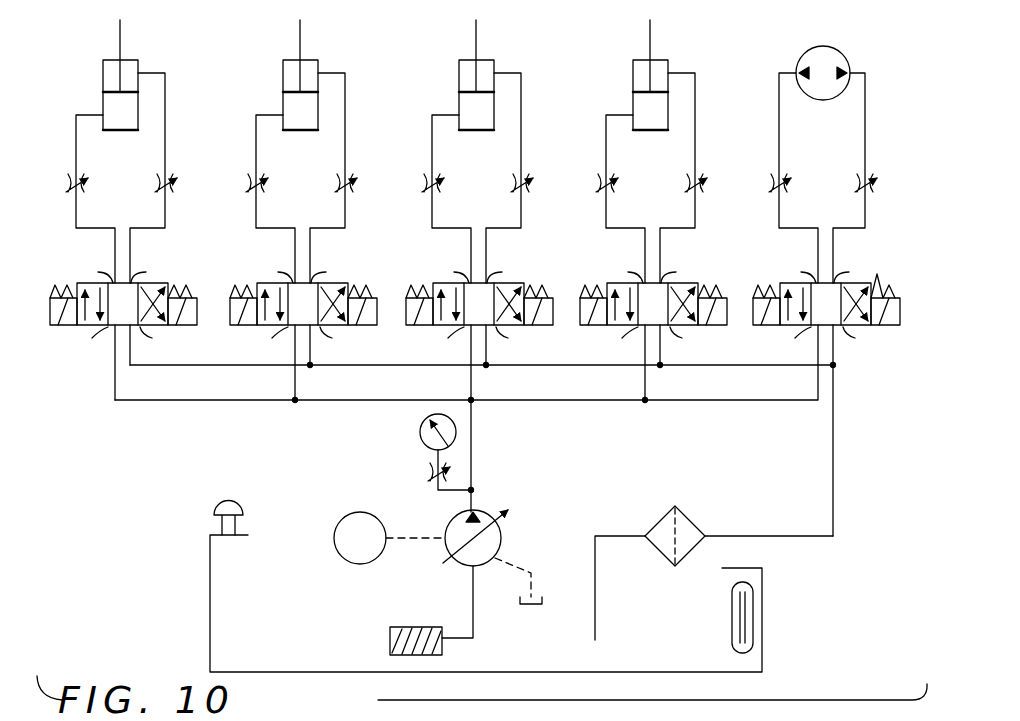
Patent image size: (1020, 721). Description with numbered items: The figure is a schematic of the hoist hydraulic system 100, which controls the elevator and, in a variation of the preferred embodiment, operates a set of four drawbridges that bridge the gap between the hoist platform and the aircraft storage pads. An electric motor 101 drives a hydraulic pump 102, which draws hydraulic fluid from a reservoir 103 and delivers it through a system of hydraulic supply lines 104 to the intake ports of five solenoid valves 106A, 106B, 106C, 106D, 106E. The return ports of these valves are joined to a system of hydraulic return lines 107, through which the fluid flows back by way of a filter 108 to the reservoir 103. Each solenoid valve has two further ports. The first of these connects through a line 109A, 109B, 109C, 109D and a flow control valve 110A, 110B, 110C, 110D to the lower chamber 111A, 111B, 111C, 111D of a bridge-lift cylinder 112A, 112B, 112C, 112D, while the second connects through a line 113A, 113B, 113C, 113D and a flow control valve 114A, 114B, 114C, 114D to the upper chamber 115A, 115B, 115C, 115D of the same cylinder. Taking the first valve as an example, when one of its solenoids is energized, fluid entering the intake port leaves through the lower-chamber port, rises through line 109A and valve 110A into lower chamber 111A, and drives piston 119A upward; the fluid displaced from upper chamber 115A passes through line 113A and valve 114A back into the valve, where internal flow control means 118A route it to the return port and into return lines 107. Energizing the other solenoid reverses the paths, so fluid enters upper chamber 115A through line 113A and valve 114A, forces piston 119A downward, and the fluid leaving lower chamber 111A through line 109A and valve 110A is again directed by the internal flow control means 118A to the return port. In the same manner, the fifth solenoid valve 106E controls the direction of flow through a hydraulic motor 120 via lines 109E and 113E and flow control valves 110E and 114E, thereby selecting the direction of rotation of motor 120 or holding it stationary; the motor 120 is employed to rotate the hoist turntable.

The hoist hydraulic system 100 is at (140, 507).
The electric motor 101 is at (375, 493).
The hydraulic pump 102 is at (500, 533).
The reservoir 103 is at (432, 627).
The hydraulic supply lines 104 is at (318, 402).
The solenoid valve 106A is at (79, 323).
The solenoid valve 106B is at (292, 314).
The solenoid valve 106C is at (468, 314).
The solenoid valve 106D is at (642, 314).
The solenoid valve 106E is at (815, 314).
The hydraulic return lines 107 is at (362, 367).
The filter 108 is at (686, 527).
The hydraulic line 109A is at (75, 226).
The hydraulic line 109B is at (252, 199).
The hydraulic line 109C is at (428, 199).
The hydraulic line 109D is at (602, 199).
The hydraulic line 109E is at (775, 178).
The flow control valve 110A is at (65, 183).
The flow control valve 110B is at (236, 165).
The flow control valve 110C is at (412, 165).
The flow control valve 110D is at (586, 165).
The flow control valve 110E is at (759, 165).
The lower chamber 111A is at (136, 126).
The lower chamber 111B is at (304, 124).
The lower chamber 111C is at (480, 124).
The lower chamber 111D is at (654, 124).
The bridge-lift cylinder 112A is at (133, 65).
The bridge-lift cylinder 112B is at (333, 56).
The bridge-lift cylinder 112C is at (510, 56).
The bridge-lift cylinder 112D is at (684, 56).
The hydraulic line 113A is at (166, 98).
The hydraulic line 113B is at (352, 178).
The hydraulic line 113C is at (529, 178).
The hydraulic line 113D is at (703, 178).
The hydraulic line 113E is at (875, 178).
The flow control valve 114A is at (169, 189).
The flow control valve 114B is at (366, 194).
The flow control valve 114C is at (542, 194).
The flow control valve 114D is at (716, 194).
The flow control valve 114E is at (887, 194).
The upper chamber 115A is at (103, 72).
The upper chamber 115B is at (274, 85).
The upper chamber 115C is at (450, 85).
The upper chamber 115D is at (624, 85).
The internal flow control means 118A is at (117, 355).
The piston 119A is at (104, 98).
The hydraulic motor 120 is at (840, 69).